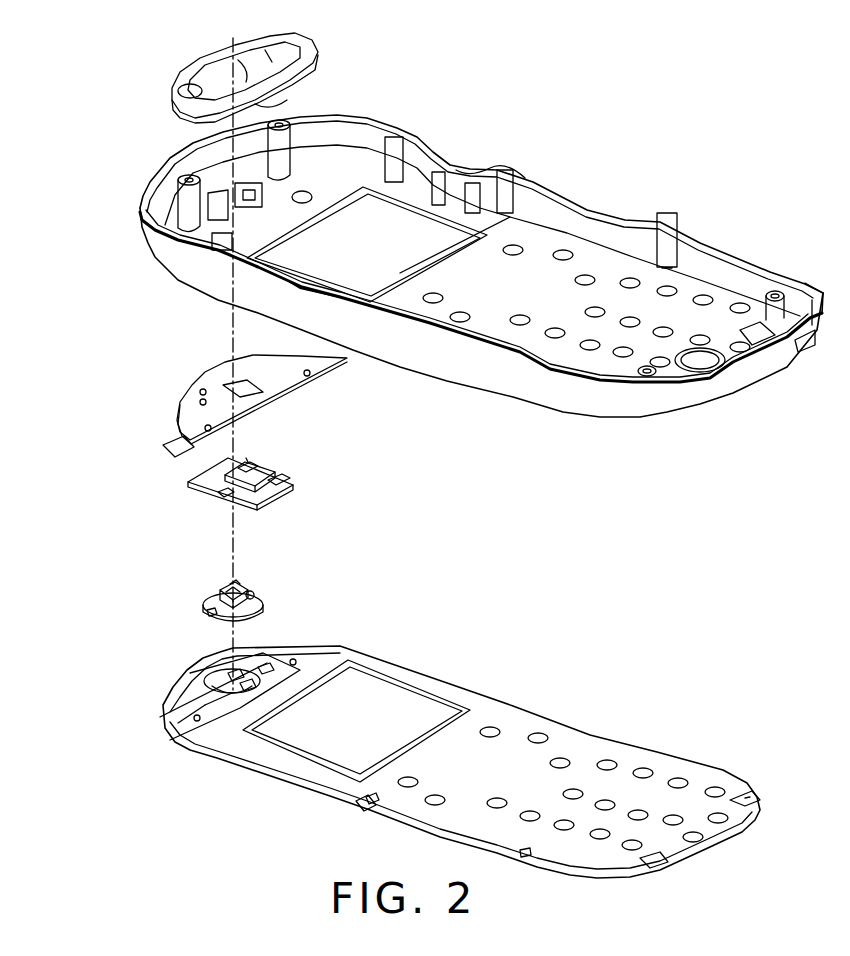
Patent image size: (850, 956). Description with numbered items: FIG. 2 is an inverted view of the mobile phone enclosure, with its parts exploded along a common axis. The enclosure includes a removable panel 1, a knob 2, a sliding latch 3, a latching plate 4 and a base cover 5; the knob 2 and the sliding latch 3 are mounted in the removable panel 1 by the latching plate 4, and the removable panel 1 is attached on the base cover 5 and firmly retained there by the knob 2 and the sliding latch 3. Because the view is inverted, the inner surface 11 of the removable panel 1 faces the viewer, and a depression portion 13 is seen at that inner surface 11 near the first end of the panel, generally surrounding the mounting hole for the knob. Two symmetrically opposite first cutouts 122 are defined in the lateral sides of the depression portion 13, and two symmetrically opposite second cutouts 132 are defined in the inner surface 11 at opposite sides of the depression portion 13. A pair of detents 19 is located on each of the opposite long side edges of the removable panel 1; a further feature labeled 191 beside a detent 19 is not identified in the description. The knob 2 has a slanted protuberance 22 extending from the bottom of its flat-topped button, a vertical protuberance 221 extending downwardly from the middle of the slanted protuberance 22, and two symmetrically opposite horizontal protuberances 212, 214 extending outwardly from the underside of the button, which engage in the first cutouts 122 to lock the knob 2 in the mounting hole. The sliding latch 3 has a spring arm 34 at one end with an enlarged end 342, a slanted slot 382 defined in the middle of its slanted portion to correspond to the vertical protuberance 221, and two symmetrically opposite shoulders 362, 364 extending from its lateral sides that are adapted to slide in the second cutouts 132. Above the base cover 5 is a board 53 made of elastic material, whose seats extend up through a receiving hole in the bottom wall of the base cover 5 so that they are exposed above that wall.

The removable panel 1 is at (410, 738).
The inner surface 11 is at (663, 770).
The depression portion 13 is at (200, 673).
The second cutouts 132 is at (257, 672).
The first cutouts 122 is at (244, 668).
The detents 19 is at (360, 808).
The latch 191 is at (374, 805).
The knob 2 is at (214, 570).
The slanted protuberance 22 is at (228, 596).
The vertical protuberance 221 is at (238, 586).
The horizontal protuberance 212 is at (252, 592).
The horizontal protuberance 214 is at (208, 612).
The sliding latch 3 is at (219, 460).
The spring arm 34 is at (283, 496).
The enlarged end 342 is at (285, 476).
The shoulder 362 is at (272, 466).
The shoulder 364 is at (224, 496).
The slanted slot 382 is at (248, 462).
The latching plate 4 is at (185, 375).
The base cover 5 is at (128, 196).
The board 53 is at (184, 57).